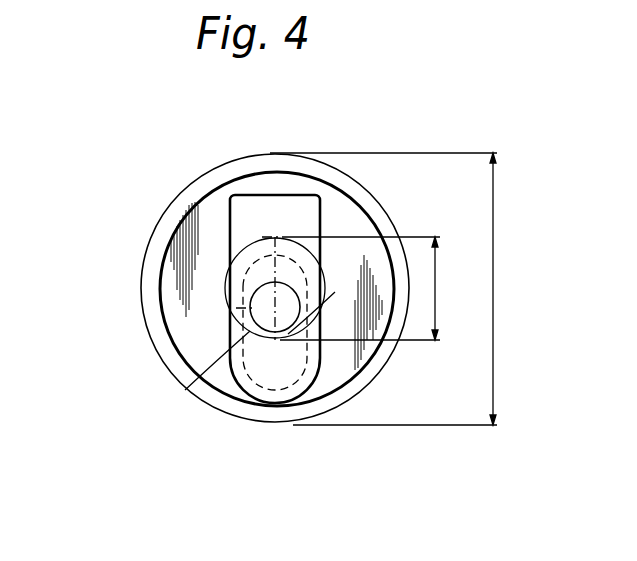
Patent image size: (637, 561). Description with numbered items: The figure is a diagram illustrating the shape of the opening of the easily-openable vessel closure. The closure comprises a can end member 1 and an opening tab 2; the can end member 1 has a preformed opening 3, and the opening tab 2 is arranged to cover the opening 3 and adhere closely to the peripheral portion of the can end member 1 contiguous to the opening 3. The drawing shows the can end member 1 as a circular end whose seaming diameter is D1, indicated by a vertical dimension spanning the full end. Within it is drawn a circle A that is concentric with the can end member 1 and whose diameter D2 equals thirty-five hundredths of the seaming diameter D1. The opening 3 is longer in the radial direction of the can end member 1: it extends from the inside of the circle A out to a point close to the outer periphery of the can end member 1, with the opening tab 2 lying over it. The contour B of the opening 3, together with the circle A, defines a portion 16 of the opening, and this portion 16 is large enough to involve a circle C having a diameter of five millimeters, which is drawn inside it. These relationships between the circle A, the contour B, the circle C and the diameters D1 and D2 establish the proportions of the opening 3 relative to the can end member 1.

The can end member 1 is at (178, 318).
The opening tab 2 is at (240, 218).
The opening 3 is at (270, 360).
The portion 16 is at (270, 272).
The circle A is at (185, 390).
The contour B is at (298, 278).
The circle C is at (301, 388).
The seaming diameter D1 is at (390, 289).
The diameter D2 is at (367, 288).